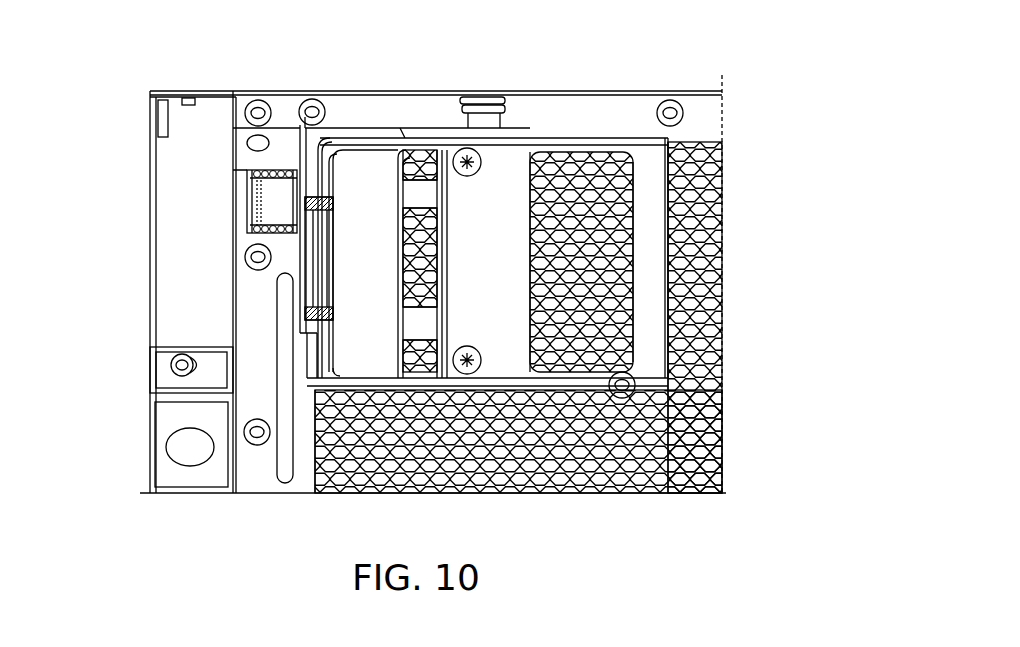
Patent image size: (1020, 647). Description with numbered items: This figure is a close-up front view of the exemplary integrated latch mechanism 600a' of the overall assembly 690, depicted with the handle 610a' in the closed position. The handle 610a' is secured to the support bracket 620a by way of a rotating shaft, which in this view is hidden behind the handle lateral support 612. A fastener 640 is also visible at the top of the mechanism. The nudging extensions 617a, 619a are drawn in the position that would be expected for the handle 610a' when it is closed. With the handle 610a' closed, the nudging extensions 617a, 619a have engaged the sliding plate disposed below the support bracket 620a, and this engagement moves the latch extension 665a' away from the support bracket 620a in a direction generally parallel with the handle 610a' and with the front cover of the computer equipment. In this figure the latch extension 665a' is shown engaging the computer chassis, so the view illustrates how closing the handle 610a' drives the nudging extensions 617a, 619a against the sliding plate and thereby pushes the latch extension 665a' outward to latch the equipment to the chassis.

The rack mount assembly 690 is at (775, 58).
The integrated latch mechanism 600a' is at (486, 209).
The thumb screw 640 is at (498, 97).
The handle 610a' is at (570, 317).
The support bracket 620a is at (503, 323).
The handle lateral support 612 is at (353, 318).
The latch extension 665a' is at (168, 201).
The nudging extension 617a is at (270, 208).
The nudging extension 619a is at (300, 311).